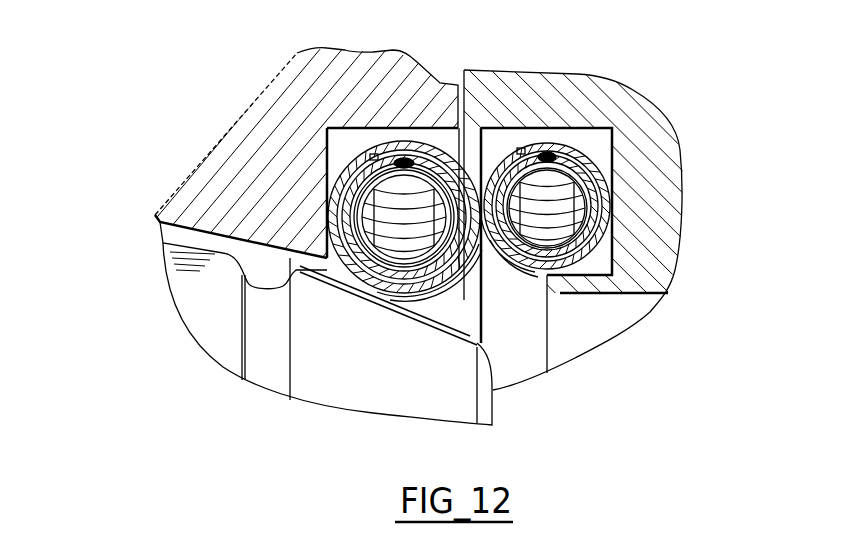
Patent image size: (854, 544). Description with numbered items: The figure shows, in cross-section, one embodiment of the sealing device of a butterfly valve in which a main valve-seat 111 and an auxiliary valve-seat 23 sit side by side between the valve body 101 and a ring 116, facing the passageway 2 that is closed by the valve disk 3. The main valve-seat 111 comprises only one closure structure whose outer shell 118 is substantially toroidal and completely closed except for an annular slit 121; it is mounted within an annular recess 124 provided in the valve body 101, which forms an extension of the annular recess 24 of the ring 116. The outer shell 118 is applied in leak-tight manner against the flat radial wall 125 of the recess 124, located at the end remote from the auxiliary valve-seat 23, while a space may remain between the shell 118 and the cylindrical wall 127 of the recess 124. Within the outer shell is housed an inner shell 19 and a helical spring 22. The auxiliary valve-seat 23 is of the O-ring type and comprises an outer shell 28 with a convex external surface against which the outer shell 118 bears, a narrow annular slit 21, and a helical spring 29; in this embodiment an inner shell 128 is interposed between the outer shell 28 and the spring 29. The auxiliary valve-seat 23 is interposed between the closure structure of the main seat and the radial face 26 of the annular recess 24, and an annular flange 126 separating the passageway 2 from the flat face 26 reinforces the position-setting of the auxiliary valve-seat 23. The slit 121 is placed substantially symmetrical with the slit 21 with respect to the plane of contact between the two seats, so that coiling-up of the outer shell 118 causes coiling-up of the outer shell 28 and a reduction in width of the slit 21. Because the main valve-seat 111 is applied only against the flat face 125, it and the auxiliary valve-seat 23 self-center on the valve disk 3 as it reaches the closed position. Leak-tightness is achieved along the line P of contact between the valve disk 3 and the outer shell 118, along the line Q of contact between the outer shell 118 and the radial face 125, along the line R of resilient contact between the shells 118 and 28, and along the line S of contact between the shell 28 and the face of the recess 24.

The passageway 2 is at (160, 231).
The valve disk 3 is at (483, 403).
The inner shell 19 is at (379, 295).
The annular slit 21 is at (512, 153).
The helical spring 22 is at (340, 282).
The auxiliary valve-seat 23 is at (523, 290).
The annular recess 24 is at (492, 150).
The radial face 26 is at (608, 145).
The outer shell 28 is at (600, 237).
The helical spring 29 is at (628, 175).
The valve body 101 is at (237, 100).
The main valve-seat 111 is at (333, 147).
The ring 116 is at (602, 75).
The outer shell 118 is at (390, 297).
The annular slit 121 is at (431, 140).
The annular recess 124 is at (322, 170).
The flat radial wall 125 is at (328, 183).
The annular flange 126 is at (597, 297).
The cylindrical wall 127 is at (338, 122).
The inner shell 128 is at (612, 235).
The line of contact P is at (377, 293).
The line of contact Q is at (327, 220).
The line of resilient contact R is at (478, 160).
The line of contact S is at (605, 178).